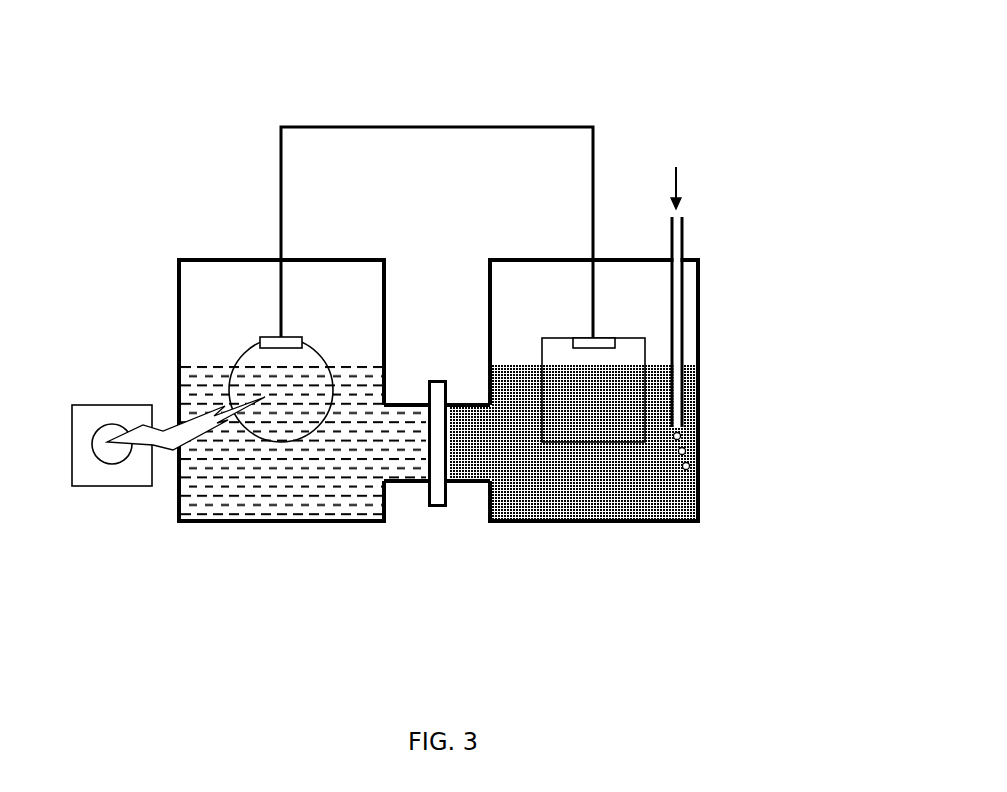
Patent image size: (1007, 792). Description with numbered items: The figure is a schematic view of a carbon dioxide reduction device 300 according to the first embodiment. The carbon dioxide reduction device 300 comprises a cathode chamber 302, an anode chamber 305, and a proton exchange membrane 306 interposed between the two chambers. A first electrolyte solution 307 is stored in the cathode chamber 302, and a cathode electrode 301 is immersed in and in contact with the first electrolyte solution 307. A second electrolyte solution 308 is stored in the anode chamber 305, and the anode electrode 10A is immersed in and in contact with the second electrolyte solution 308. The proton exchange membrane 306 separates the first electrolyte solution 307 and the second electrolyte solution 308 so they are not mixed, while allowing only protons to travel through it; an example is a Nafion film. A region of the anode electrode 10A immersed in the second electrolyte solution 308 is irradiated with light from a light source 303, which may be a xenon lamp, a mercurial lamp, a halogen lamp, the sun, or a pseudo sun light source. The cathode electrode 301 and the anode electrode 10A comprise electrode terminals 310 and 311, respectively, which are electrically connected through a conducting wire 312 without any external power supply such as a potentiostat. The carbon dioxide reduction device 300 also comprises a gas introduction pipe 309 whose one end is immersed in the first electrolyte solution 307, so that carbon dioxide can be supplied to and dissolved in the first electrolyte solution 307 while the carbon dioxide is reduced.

The carbon dioxide reduction device 300 is at (601, 67).
The cathode electrode 301 is at (583, 420).
The cathode chamber 302 is at (697, 323).
The light source 303 is at (93, 470).
The anode chamber 305 is at (177, 276).
The proton exchange membrane 306 is at (432, 497).
The first electrolyte solution 307 is at (674, 498).
The second electrolyte solution 308 is at (192, 383).
The gas introduction pipe 309 is at (683, 230).
The electrode terminal 310 is at (605, 344).
The electrode terminal 311 is at (267, 342).
The conducting wire 312 is at (494, 125).
The anode electrode 10A is at (273, 430).